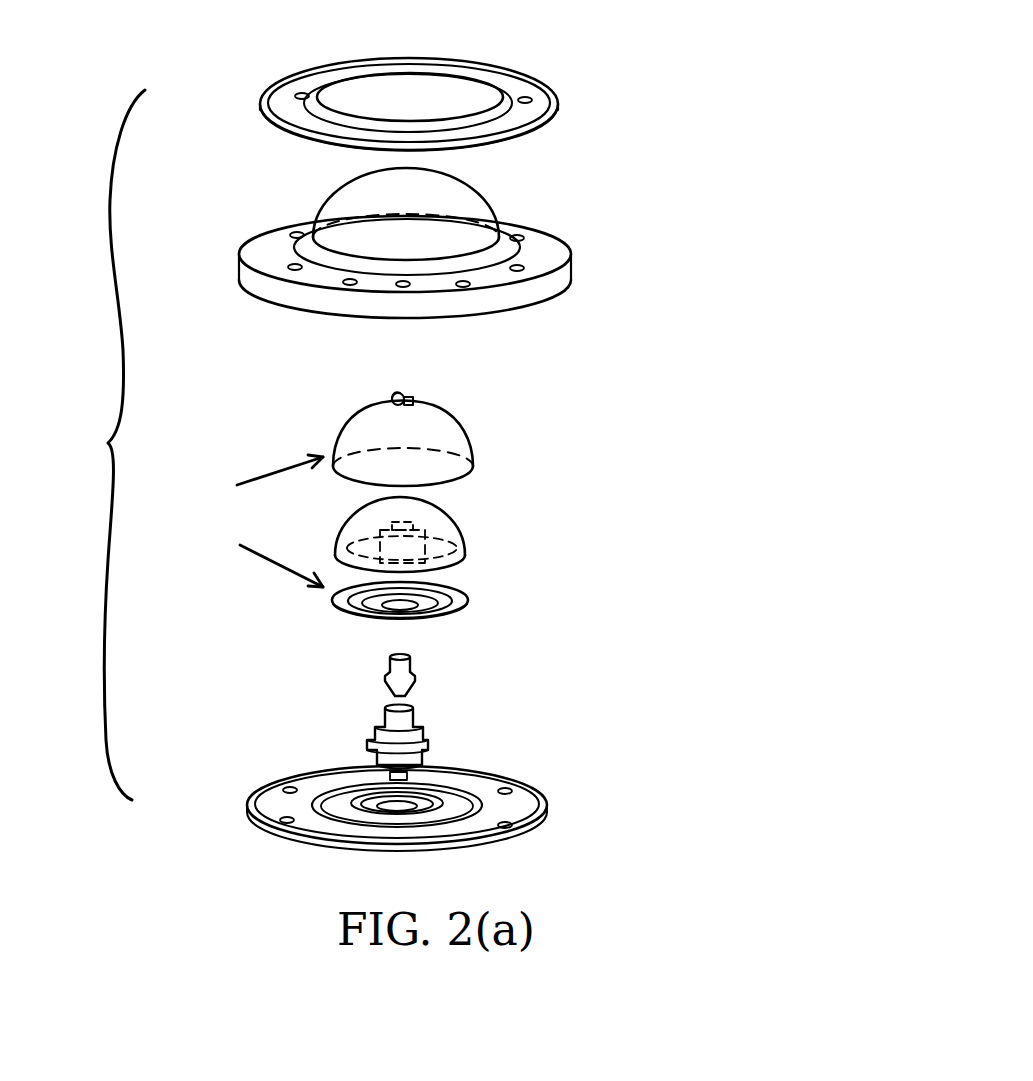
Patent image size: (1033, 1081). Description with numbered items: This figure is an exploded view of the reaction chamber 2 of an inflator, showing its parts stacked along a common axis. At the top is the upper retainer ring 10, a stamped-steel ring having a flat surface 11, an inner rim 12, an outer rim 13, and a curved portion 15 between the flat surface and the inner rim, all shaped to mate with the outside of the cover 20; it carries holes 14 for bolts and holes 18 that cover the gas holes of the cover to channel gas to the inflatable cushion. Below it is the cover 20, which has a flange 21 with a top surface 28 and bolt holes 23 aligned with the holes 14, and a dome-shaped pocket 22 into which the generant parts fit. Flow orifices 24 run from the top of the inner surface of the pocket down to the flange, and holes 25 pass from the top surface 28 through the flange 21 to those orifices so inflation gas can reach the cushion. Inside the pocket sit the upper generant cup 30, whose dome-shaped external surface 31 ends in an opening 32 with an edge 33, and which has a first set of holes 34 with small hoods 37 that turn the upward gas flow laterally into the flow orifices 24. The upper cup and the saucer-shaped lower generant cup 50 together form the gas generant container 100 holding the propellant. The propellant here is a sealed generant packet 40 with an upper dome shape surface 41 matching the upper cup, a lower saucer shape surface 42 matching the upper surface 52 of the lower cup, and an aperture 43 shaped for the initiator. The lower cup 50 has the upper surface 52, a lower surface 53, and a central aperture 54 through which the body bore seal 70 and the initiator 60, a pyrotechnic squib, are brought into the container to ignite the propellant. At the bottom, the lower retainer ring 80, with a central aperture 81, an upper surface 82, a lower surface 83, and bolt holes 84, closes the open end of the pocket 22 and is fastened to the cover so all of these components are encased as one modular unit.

The reaction chamber 2 is at (91, 445).
The upper retainer ring 10 is at (745, 87).
The flat surface 11 is at (535, 106).
The inner rim 12 is at (485, 76).
The outer rim 13 is at (270, 86).
The holes 14 is at (300, 93).
The curved portion 15 is at (505, 118).
The holes 18 is at (300, 114).
The cover 20 is at (720, 267).
The flange 21 is at (558, 250).
The pocket 22 is at (352, 197).
The bolt holes 23 is at (297, 236).
The flow orifices 24 is at (548, 298).
The holes 25 is at (295, 269).
The top surface 28 is at (553, 270).
The upper generant cup 30 is at (720, 437).
The external surface 31 is at (450, 438).
The opening 32 is at (448, 476).
The edge 33 is at (447, 486).
The first set of holes 34 is at (412, 404).
The hoods 37 is at (403, 396).
The generant packet 40 is at (712, 530).
The upper dome shape surface 41 is at (365, 523).
The lower saucer shape surface 42 is at (455, 569).
The aperture 43 is at (415, 548).
The lower generant cup 50 is at (713, 605).
The upper surface 52 is at (460, 598).
The lower surface 53 is at (450, 615).
The aperture 54 is at (400, 616).
The initiator 60 is at (707, 682).
The body bore seal 70 is at (710, 739).
The lower retainer ring 80 is at (705, 815).
The aperture 81 is at (398, 810).
The upper surface 82 is at (500, 808).
The lower surface 83 is at (505, 838).
The bolt holes 84 is at (275, 820).
The gas generant container 100 is at (264, 521).